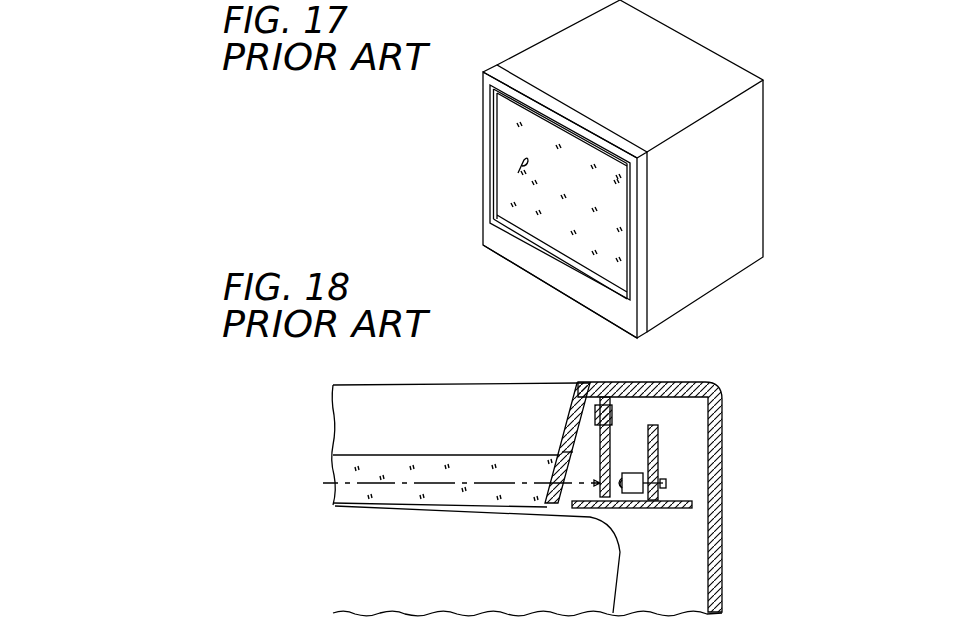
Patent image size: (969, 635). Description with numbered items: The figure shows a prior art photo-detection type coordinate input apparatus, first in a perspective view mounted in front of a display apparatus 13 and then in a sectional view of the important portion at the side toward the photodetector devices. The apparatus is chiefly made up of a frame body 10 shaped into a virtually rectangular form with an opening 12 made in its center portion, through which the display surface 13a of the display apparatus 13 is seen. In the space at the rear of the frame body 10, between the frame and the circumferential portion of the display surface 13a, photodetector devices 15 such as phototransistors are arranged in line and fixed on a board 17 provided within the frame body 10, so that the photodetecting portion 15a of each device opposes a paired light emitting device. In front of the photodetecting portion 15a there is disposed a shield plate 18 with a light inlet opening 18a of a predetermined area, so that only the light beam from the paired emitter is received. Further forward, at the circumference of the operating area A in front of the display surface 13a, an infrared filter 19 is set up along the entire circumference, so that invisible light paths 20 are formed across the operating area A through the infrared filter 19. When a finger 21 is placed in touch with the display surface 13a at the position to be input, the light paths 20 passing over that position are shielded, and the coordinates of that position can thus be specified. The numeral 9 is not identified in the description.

In FIG. 17, the door frame 9 is at (493, 107).
In FIG. 17, the frame body 10 is at (492, 247).
In FIG. 18, the frame body 10 is at (713, 390).
In FIG. 17, the opening 12 is at (507, 208).
In FIG. 18, the opening 12 is at (438, 387).
In FIG. 17, the display apparatus 13 is at (745, 268).
In FIG. 18, the display apparatus 13 is at (333, 543).
In FIG. 17, the display surface 13a is at (506, 133).
In FIG. 18, the display surface 13a is at (344, 498).
In FIG. 18, the photodetector device 15 is at (637, 473).
In FIG. 18, the photodetecting portion 15a is at (620, 480).
In FIG. 18, the board 17 is at (658, 425).
In FIG. 18, the shield plate 18 is at (602, 403).
In FIG. 18, the light inlet opening 18a is at (597, 480).
In FIG. 17, the infrared filter 19 is at (555, 257).
In FIG. 18, the infrared filter 19 is at (548, 460).
In FIG. 18, the optical path 20 is at (432, 482).
In FIG. 17, the finger 21 is at (517, 168).
In FIG. 18, the operating area A is at (365, 462).